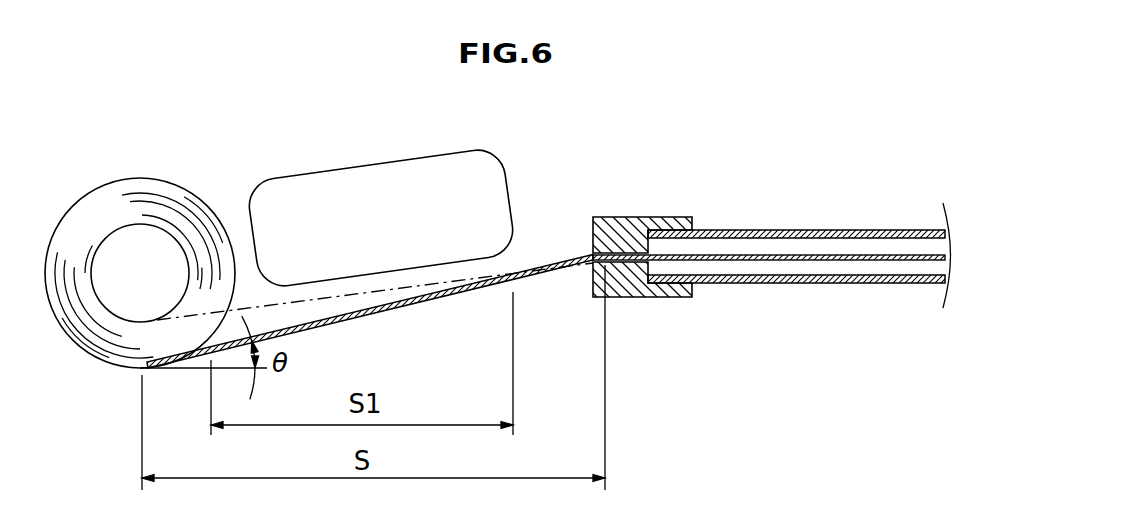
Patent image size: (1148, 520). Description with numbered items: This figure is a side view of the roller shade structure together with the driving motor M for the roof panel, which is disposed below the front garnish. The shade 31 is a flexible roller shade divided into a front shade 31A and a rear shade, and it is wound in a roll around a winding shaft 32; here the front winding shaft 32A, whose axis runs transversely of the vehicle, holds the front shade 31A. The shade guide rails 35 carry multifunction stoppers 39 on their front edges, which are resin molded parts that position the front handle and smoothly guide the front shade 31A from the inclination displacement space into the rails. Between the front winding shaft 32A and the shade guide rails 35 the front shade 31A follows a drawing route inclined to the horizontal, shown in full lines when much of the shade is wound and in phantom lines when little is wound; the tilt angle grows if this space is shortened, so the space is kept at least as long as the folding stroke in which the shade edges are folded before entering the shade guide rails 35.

The front winding shaft 32A is at (140, 243).
The winding shaft 32 is at (125, 263).
The front shade 31A is at (546, 314).
The shade 31 is at (380, 314).
The driving motor M is at (405, 168).
The multifunction stopper 39 is at (627, 215).
The shade guide rail 35 is at (855, 284).